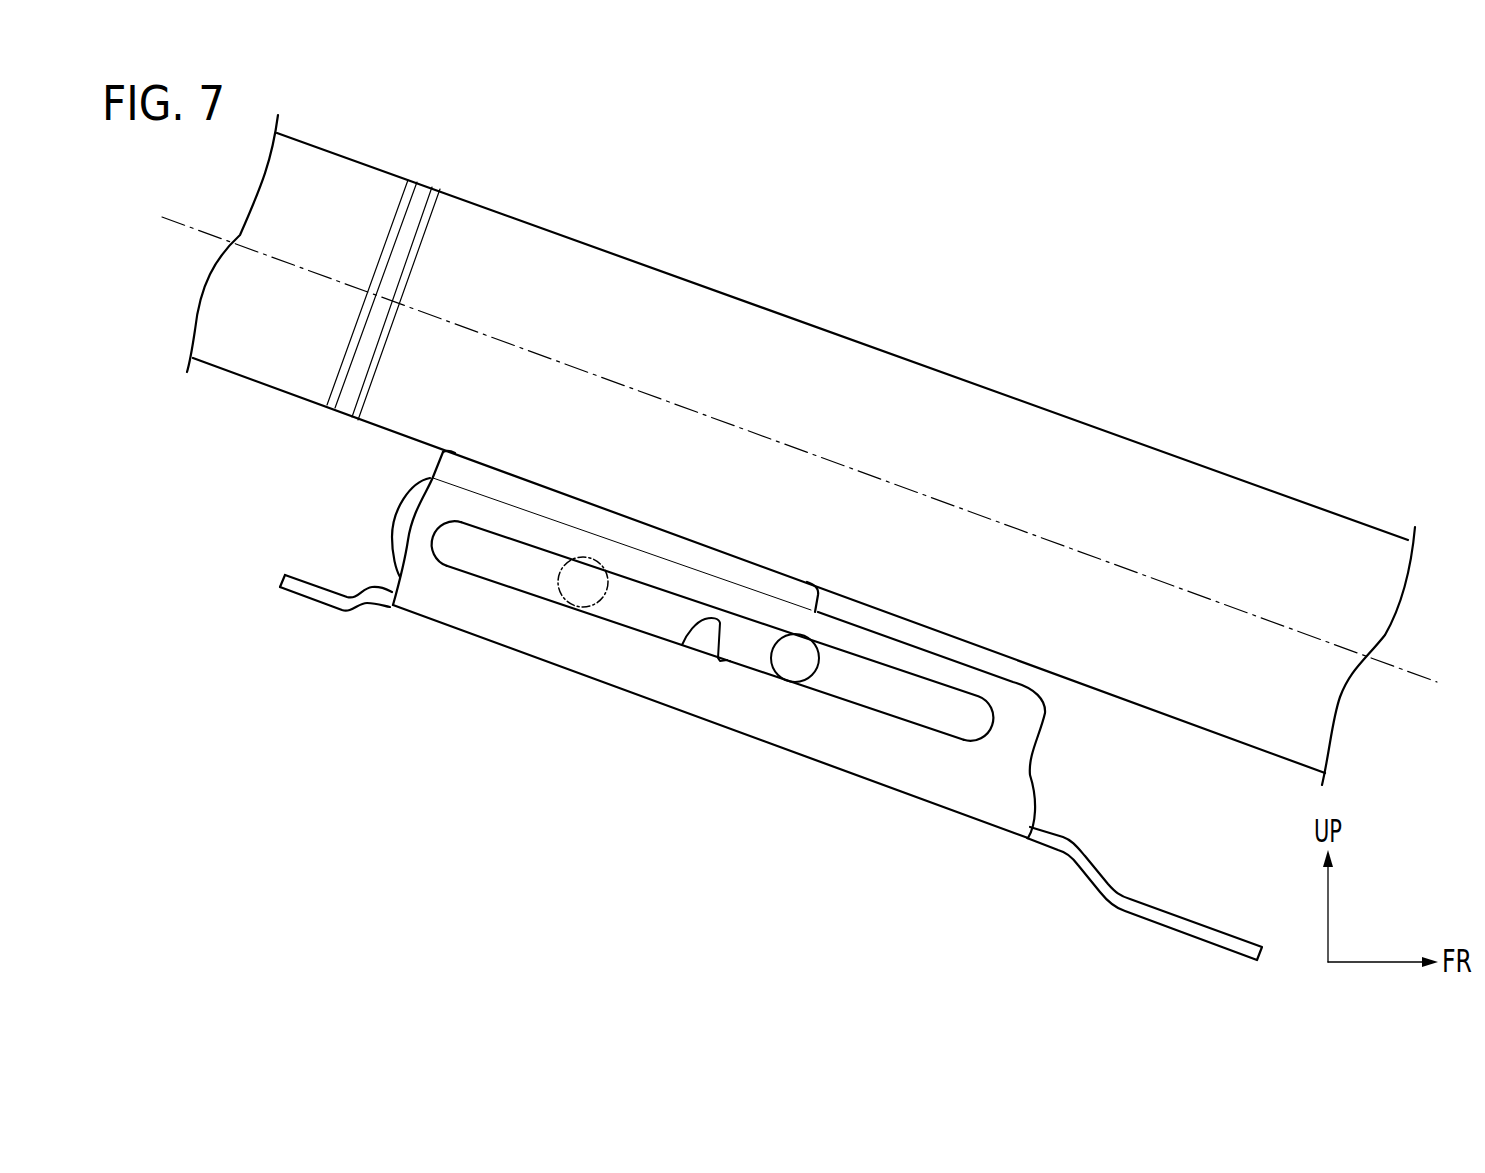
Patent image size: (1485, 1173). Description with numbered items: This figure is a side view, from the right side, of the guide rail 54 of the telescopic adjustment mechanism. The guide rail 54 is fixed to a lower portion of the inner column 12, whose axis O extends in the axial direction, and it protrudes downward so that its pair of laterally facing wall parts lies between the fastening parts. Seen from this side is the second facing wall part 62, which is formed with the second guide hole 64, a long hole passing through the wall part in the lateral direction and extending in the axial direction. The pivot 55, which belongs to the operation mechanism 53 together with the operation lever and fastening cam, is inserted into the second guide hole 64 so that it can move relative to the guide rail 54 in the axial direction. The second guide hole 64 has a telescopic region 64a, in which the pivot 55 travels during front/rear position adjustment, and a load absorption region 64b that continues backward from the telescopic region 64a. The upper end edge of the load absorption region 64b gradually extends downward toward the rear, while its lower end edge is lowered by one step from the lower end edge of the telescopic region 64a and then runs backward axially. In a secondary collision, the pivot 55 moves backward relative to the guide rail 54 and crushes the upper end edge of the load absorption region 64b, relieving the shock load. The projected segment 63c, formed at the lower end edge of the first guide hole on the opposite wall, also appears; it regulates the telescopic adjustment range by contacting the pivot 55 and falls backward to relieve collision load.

The inner column 12 is at (844, 349).
The axis O is at (1407, 670).
The second facing wall part 62 is at (771, 705).
The second guide hole 64 is at (713, 688).
The telescopic region 64a is at (833, 686).
The load absorption region 64b is at (630, 618).
The projected segment 63c is at (702, 648).
The pivot 55 is at (571, 599).
The operation mechanism 53 is at (793, 660).
The guide rail 54 is at (866, 792).